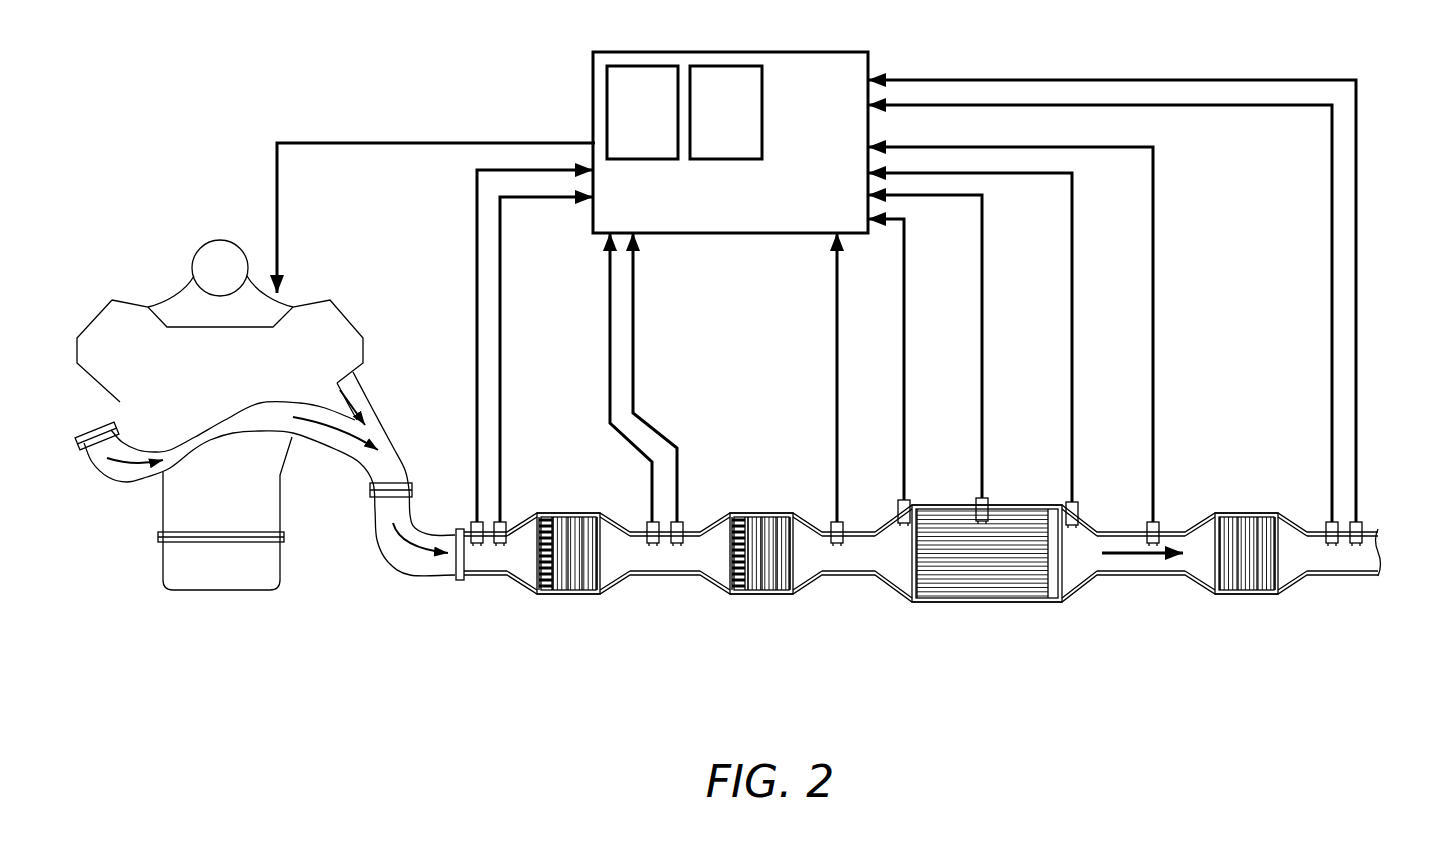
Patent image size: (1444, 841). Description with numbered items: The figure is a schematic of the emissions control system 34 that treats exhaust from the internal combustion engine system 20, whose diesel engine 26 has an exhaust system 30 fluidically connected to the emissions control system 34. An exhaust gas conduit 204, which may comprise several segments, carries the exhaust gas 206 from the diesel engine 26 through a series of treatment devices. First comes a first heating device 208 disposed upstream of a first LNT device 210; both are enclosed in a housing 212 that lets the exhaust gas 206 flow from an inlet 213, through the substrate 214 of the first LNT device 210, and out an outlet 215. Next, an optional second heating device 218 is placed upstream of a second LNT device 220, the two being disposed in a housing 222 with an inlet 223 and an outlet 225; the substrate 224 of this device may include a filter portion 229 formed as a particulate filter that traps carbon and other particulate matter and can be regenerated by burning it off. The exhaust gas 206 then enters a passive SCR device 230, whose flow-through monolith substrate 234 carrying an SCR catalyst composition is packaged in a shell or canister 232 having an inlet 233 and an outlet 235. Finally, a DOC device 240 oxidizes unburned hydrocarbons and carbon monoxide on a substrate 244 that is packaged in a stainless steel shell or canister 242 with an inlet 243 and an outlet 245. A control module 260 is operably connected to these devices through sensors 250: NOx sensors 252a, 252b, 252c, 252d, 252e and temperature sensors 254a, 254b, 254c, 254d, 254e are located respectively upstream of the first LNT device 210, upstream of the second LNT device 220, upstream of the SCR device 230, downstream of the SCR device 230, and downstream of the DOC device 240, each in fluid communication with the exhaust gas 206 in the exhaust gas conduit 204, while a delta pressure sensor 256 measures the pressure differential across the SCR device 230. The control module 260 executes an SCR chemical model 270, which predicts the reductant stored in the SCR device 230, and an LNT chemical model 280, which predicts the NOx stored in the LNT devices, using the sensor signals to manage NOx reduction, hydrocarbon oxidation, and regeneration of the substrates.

The internal combustion engine system 20 is at (252, 130).
The diesel engine 26 is at (170, 272).
The exhaust system 30 is at (310, 605).
The emissions control system 34 is at (640, 667).
The exhaust gas conduit 204 is at (373, 403).
The exhaust gas 206 is at (403, 550).
The first heating device 208 is at (545, 597).
The first LNT device 210 is at (557, 600).
The housing 212 is at (573, 513).
The inlet 213 is at (473, 578).
The substrate 214 is at (582, 595).
The outlet 215 is at (638, 580).
The second heating device 218 is at (737, 597).
The second LNT device 220 is at (748, 600).
The housing 222 is at (770, 513).
The inlet 223 is at (697, 533).
The substrate 224 is at (753, 597).
The outlet 225 is at (825, 580).
The filter portion 229 is at (782, 585).
The SCR device 230 is at (1012, 608).
The shell or canister 232 is at (958, 505).
The inlet 233 is at (870, 580).
The substrate 234 is at (955, 578).
The outlet 235 is at (1117, 532).
The DOC device 240 is at (1238, 597).
The shell or canister 242 is at (1247, 513).
The inlet 243 is at (1178, 532).
The substrate 244 is at (1248, 570).
The outlet 245 is at (1367, 577).
The sensors 250 is at (1220, 362).
The first NOx sensor 252a is at (508, 523).
The second NOx sensor 252b is at (645, 527).
The third NOx sensor 252c is at (827, 527).
The fourth NOx sensor 252d is at (1080, 507).
The fifth NOx sensor 252e is at (1323, 528).
The first temperature sensor 254a is at (453, 527).
The second temperature sensor 254b is at (680, 523).
The third temperature sensor 254c is at (897, 508).
The fourth temperature sensor 254d is at (1168, 528).
The fifth temperature sensor 254e is at (1363, 528).
The pressure sensor 256 is at (990, 502).
The control module 260 is at (730, 142).
The SCR chemical model 270 is at (642, 112).
The LNT chemical model 280 is at (726, 112).